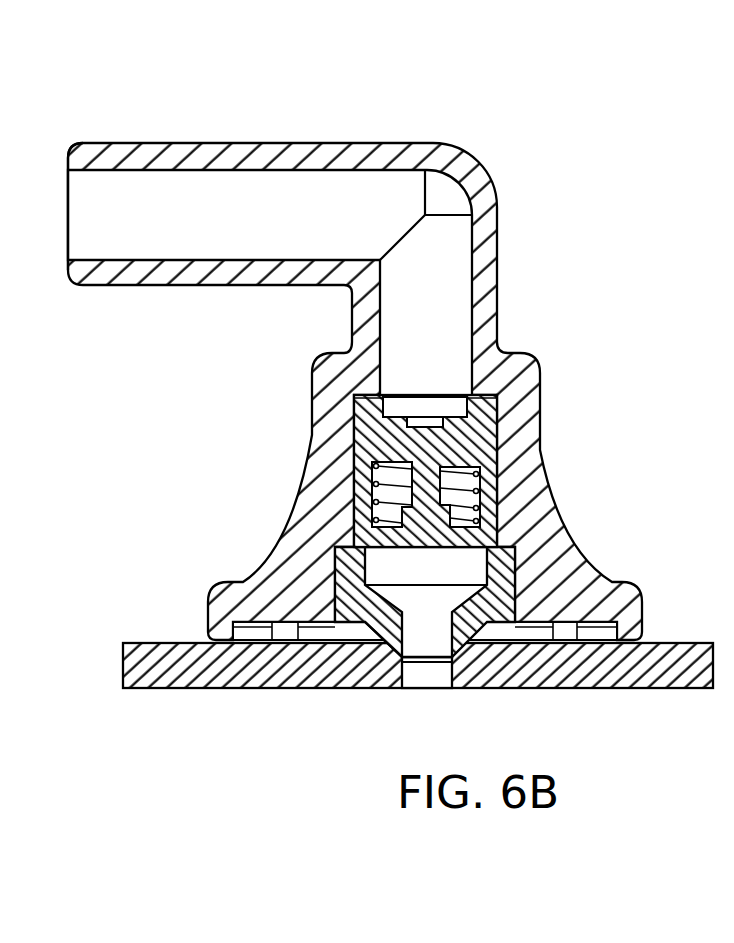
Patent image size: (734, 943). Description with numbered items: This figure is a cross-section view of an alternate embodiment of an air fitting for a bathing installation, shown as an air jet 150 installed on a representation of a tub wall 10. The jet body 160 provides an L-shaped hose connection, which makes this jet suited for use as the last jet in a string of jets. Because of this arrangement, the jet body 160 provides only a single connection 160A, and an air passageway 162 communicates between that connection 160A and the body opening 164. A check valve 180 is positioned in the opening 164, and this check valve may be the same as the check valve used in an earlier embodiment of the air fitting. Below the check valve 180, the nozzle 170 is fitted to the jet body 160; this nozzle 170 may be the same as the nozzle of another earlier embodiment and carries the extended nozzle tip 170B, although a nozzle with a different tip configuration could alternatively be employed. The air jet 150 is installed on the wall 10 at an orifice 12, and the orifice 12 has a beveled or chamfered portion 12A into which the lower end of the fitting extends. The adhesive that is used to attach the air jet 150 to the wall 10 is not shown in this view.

The air jet 150 is at (366, 423).
The jet body 160 is at (542, 410).
The connection 160A is at (70, 152).
The air passageway 162 is at (310, 234).
The body opening 164 is at (442, 407).
The check valve 180 is at (370, 427).
The nozzle 170 is at (505, 572).
The extended nozzle tip 170B is at (377, 631).
The wall 10 is at (152, 690).
The orifice 12 is at (422, 678).
The beveled or chamfered portion 12A is at (382, 647).